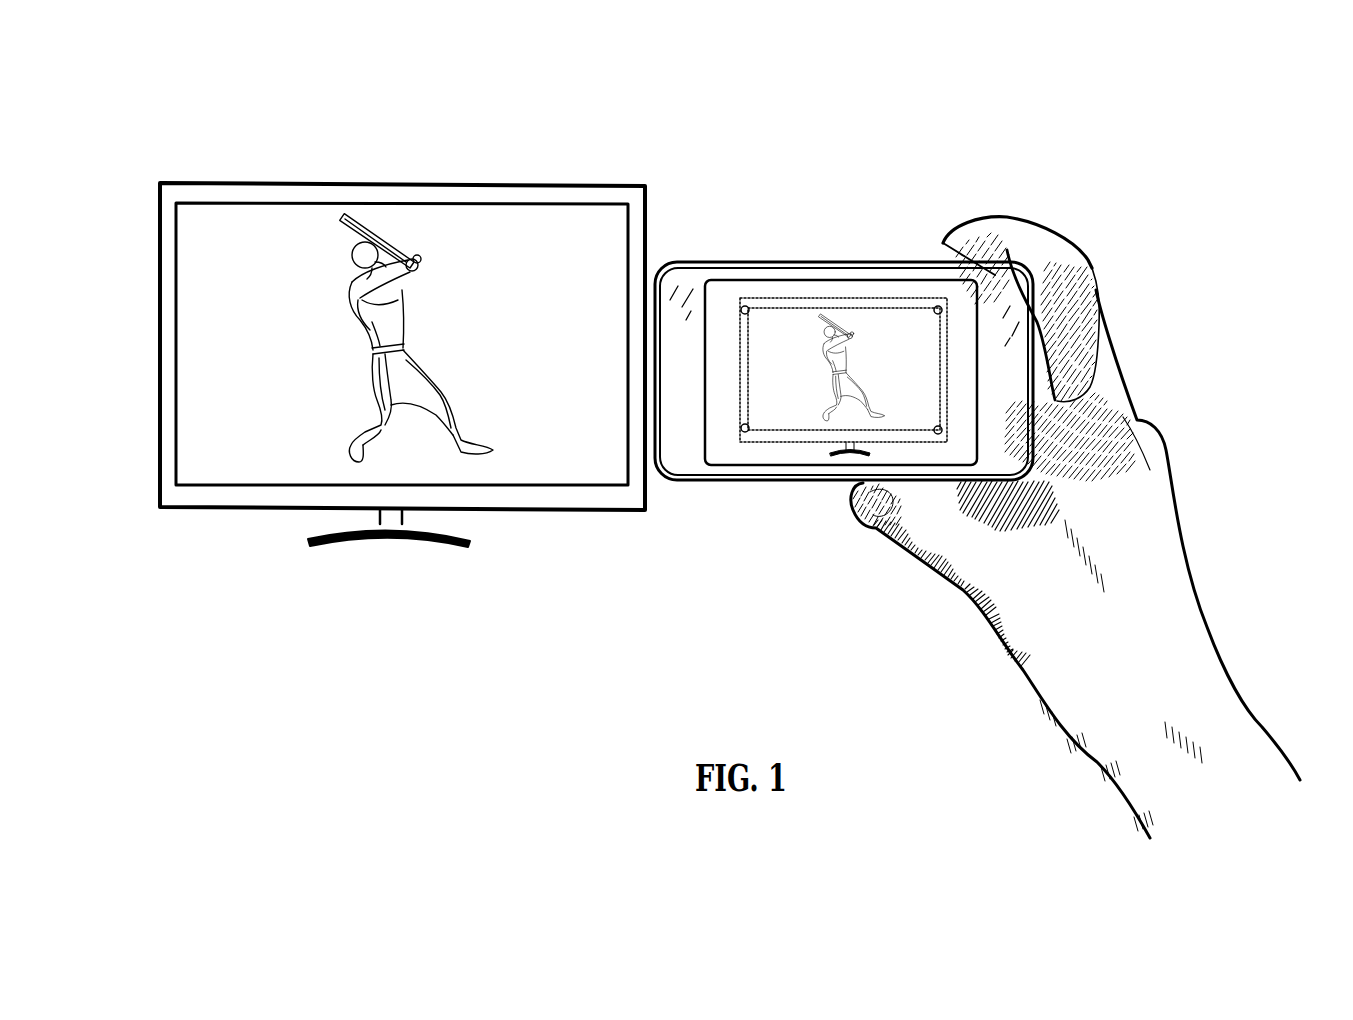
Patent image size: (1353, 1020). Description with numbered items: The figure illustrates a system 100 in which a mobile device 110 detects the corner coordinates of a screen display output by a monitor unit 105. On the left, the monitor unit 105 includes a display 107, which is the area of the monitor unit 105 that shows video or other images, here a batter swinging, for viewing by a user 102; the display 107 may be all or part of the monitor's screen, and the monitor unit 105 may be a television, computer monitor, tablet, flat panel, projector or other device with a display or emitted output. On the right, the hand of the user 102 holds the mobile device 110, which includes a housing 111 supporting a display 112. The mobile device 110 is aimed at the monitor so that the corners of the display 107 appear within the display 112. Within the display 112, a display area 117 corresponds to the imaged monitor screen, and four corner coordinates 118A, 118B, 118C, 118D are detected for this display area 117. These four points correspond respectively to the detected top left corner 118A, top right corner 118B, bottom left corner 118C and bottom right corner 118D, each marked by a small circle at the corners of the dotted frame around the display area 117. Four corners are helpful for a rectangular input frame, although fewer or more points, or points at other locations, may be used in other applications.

The system 100 is at (1093, 126).
The user 102 is at (1262, 727).
The monitor unit 105 is at (197, 510).
The display 107 is at (383, 212).
The mobile device 110 is at (1102, 292).
The housing 111 is at (726, 266).
The display 112 is at (833, 288).
The display area 117 is at (777, 420).
The corner coordinate 118A is at (745, 306).
The corner coordinate 118B is at (936, 306).
The corner coordinate 118C is at (742, 432).
The corner coordinate 118D is at (935, 434).